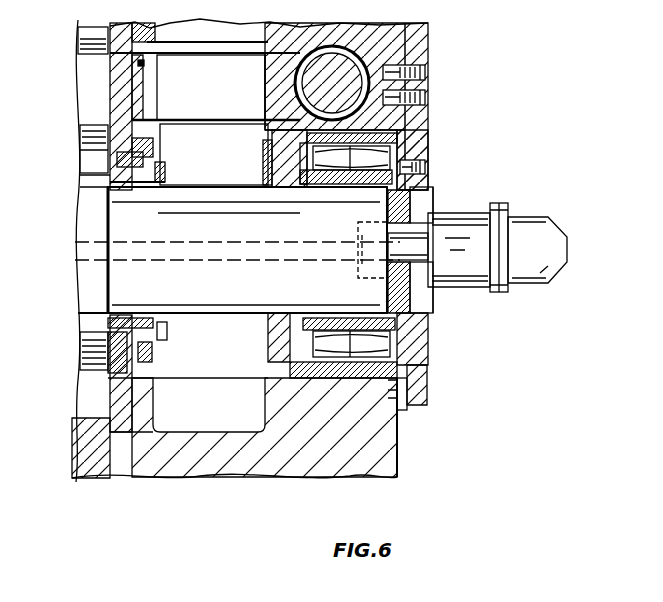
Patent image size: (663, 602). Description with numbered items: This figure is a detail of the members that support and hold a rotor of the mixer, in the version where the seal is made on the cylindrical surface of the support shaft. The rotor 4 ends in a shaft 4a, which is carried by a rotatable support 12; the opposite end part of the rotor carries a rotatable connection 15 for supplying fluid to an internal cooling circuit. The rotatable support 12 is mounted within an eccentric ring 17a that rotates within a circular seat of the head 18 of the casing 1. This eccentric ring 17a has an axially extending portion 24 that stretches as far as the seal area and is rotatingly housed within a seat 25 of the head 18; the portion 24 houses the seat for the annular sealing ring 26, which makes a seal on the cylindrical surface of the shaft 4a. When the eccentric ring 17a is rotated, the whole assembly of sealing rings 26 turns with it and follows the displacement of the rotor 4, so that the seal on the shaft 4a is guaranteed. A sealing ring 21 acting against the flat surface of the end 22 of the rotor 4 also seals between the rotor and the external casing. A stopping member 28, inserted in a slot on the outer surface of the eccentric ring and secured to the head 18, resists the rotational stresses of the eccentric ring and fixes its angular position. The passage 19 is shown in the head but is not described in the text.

The casing 1 is at (82, 485).
The rotor 4 is at (82, 290).
The shaft 4a is at (235, 298).
The rotatable support 12 is at (395, 156).
The rotatable connection 15 is at (523, 232).
The eccentric ring 17a is at (268, 135).
The head 18 is at (388, 460).
The bore 19 is at (312, 78).
The sealing ring 21 is at (107, 158).
The end of the rotor 22 is at (87, 405).
The axially extending portion 24 is at (168, 127).
The seat 25 is at (118, 68).
The annular sealing ring 26 is at (177, 154).
The stopping member 28 is at (405, 397).